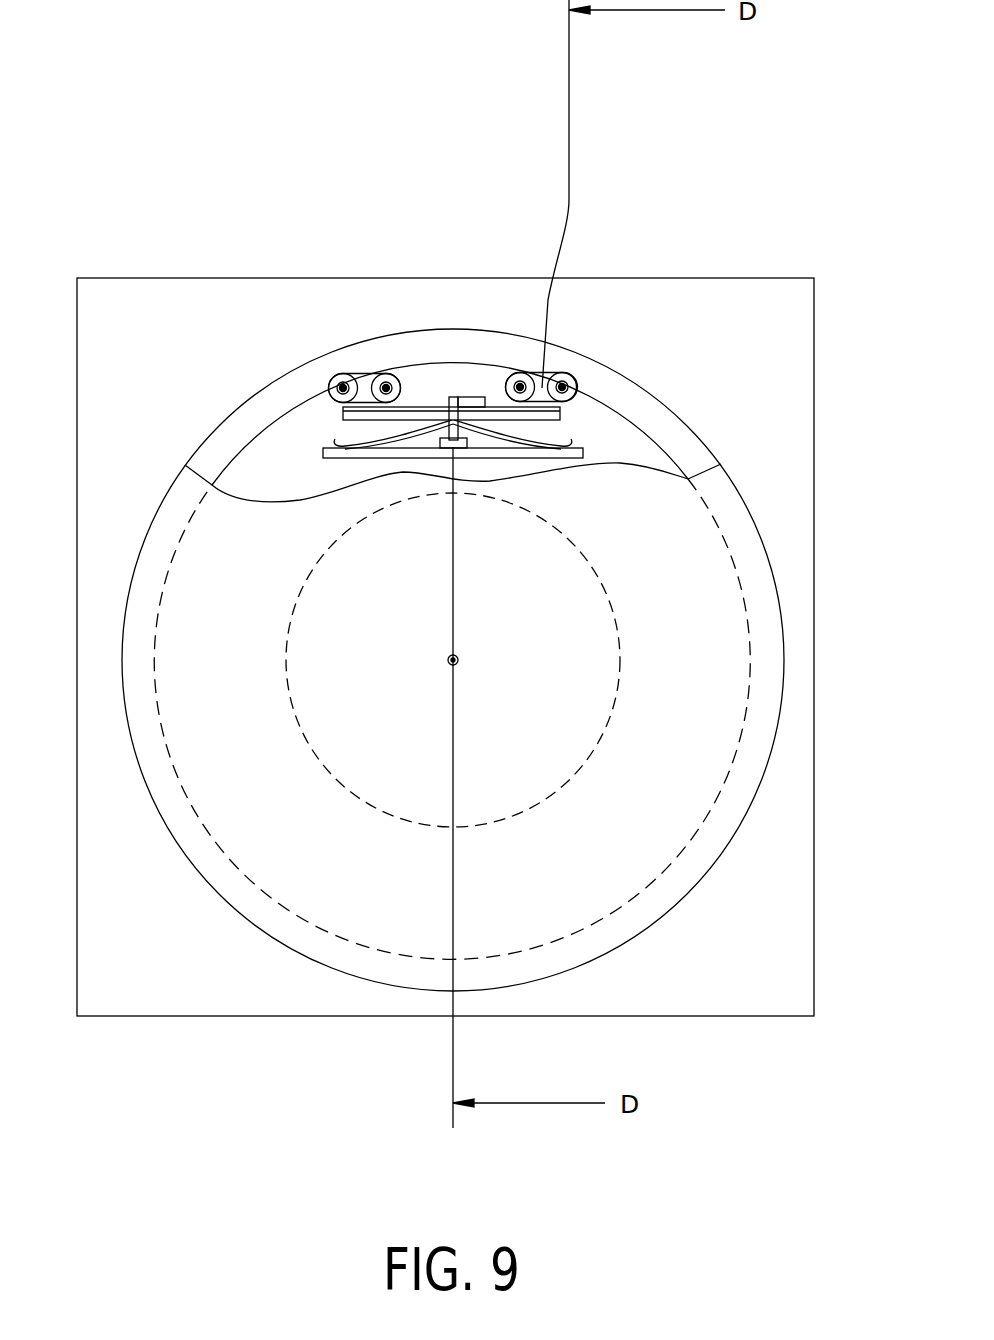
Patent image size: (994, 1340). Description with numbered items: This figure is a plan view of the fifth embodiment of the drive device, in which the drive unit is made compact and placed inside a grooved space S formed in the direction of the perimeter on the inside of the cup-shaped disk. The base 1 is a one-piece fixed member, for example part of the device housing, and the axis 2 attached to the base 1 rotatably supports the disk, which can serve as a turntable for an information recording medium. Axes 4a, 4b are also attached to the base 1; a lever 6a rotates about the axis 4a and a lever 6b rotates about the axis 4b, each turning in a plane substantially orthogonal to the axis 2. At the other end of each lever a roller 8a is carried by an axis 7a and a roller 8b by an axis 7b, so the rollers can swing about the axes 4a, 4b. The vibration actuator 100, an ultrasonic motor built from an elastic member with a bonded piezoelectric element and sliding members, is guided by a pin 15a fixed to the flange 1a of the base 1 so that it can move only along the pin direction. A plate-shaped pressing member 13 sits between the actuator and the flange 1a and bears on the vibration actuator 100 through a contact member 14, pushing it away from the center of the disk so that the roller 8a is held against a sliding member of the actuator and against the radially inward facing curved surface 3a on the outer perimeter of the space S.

The base 1 is at (748, 890).
The flange 1a is at (533, 452).
The axis 2 is at (458, 660).
The curved surface 3a is at (247, 450).
The axis 4a is at (563, 383).
The axis 4b is at (343, 388).
The lever 6a is at (577, 373).
The lever 6b is at (360, 393).
The axis 7a is at (516, 376).
The axis 7b is at (393, 372).
The roller 8a is at (519, 387).
The roller 8b is at (386, 388).
The pressing member 13 is at (500, 430).
The contact member 14 is at (440, 421).
The pin 15a is at (443, 448).
The vibration actuator 100 is at (560, 412).
The grooved space S is at (287, 850).